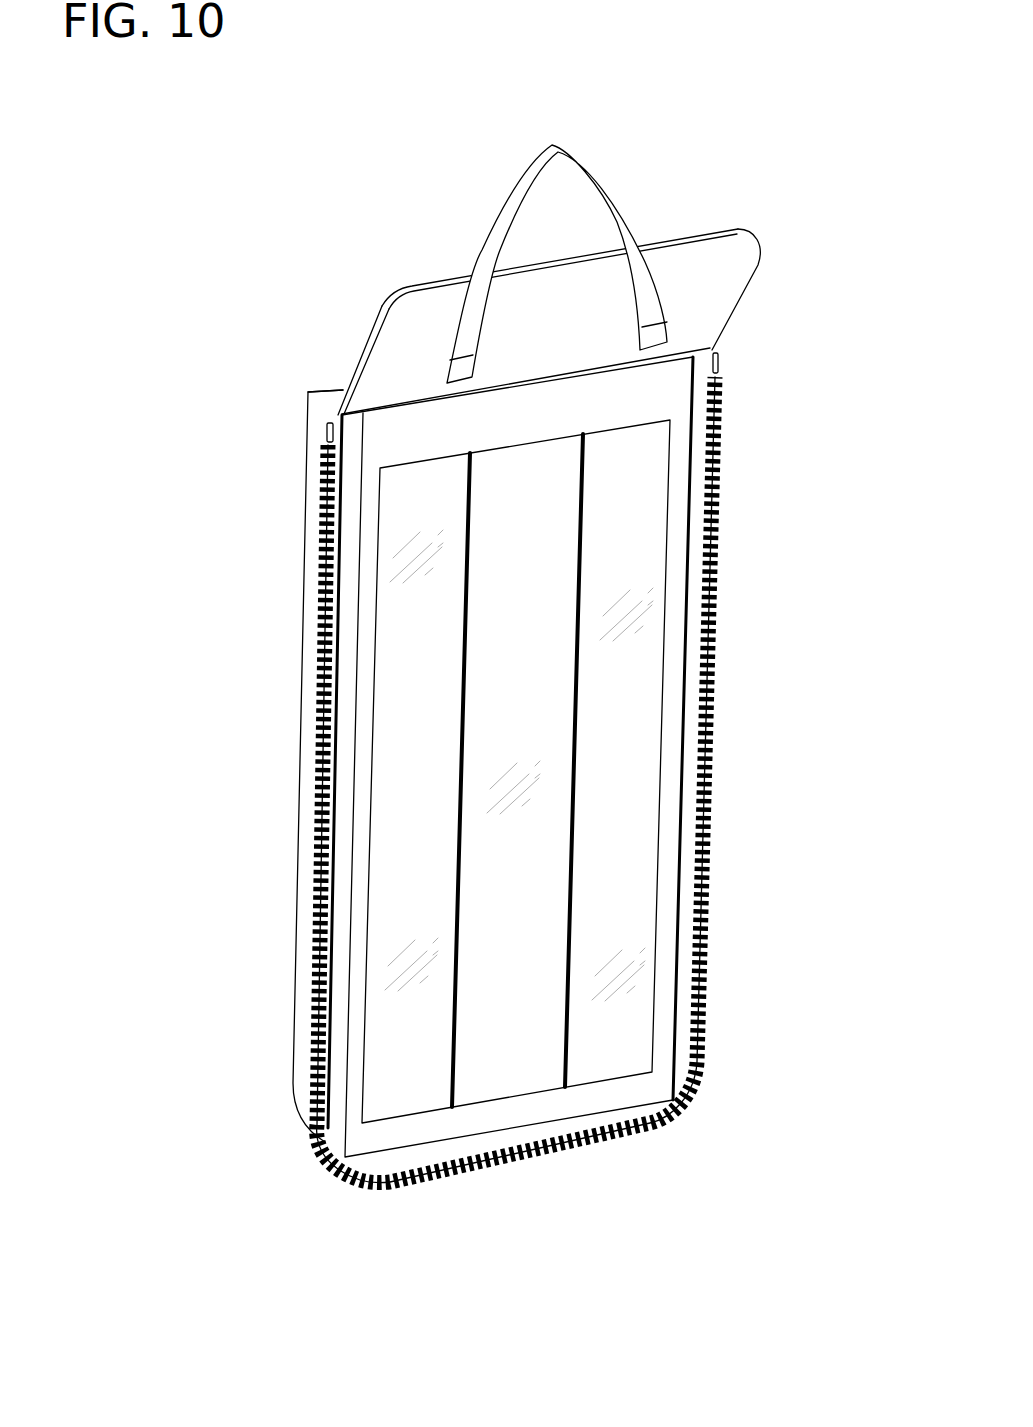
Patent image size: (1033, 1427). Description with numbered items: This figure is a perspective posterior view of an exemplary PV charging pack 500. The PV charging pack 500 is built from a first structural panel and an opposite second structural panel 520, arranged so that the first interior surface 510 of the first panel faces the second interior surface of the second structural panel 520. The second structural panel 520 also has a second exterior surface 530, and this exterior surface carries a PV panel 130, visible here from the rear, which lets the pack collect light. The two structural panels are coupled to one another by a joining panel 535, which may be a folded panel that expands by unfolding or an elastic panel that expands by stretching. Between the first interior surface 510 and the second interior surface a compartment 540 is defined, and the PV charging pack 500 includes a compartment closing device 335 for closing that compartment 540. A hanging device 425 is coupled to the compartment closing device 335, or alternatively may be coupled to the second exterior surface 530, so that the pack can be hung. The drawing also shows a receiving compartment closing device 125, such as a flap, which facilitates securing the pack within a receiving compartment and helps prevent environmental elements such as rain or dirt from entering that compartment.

The PV charging pack 500 is at (305, 1185).
The hanging device 425 is at (565, 142).
The compartment closing device 335 is at (740, 232).
The first interior surface 510 is at (338, 413).
The compartment 540 is at (341, 388).
The joining panel 535 is at (323, 412).
The second structural panel 520 is at (686, 357).
The second exterior surface 530 is at (678, 452).
The PV panel 130 is at (638, 1035).
The receiving compartment closing device 125 is at (383, 1187).